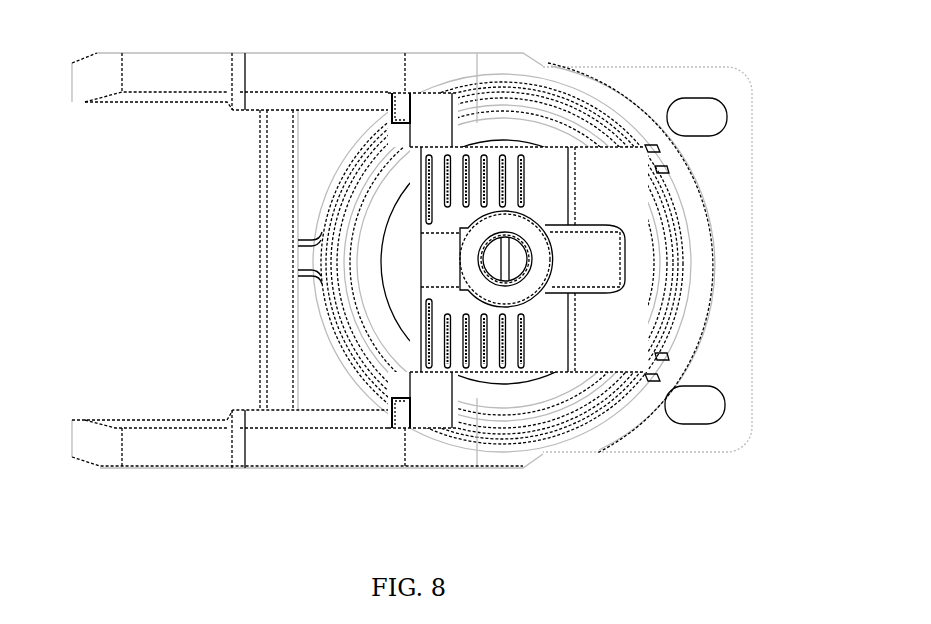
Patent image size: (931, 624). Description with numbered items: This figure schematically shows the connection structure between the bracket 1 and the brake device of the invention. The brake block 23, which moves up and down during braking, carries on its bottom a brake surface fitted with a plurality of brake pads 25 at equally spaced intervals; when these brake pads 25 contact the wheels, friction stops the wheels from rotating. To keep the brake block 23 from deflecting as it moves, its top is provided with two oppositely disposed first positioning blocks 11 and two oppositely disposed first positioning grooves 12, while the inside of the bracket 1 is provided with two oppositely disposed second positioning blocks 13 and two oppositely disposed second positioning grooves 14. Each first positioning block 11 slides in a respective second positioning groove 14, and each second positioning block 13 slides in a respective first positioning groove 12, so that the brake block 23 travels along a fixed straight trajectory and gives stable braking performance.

The bracket 1 is at (181, 443).
The first positioning block 11 is at (662, 167).
The first positioning groove 12 is at (390, 110).
The second positioning block 13 is at (397, 108).
The second positioning groove 14 is at (658, 157).
The brake block 23 is at (548, 350).
The brake pad 25 is at (502, 178).